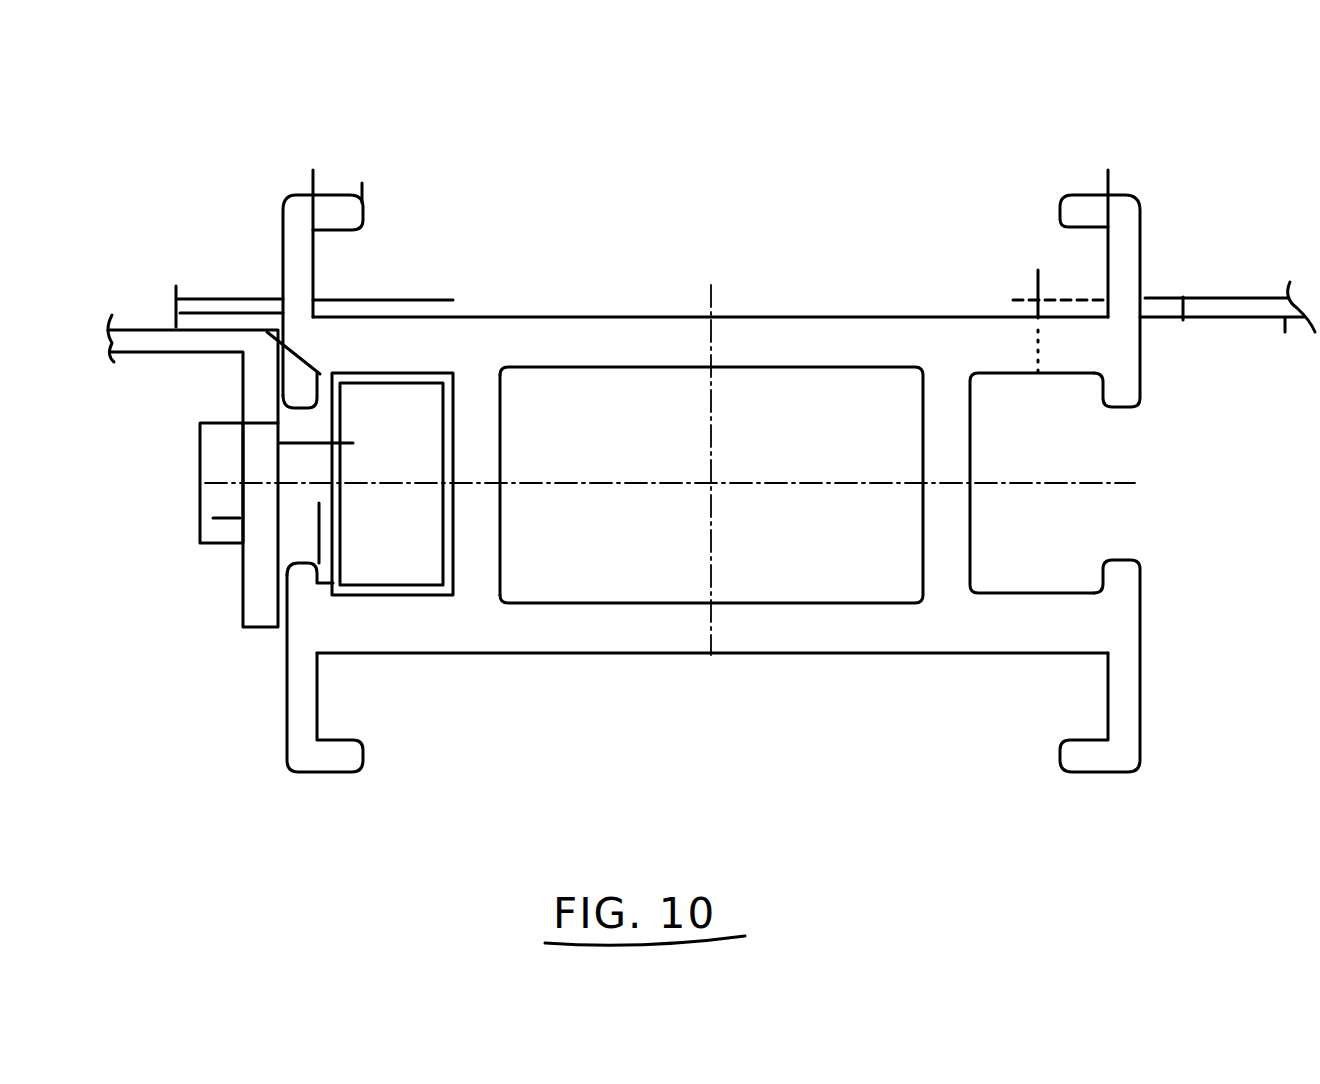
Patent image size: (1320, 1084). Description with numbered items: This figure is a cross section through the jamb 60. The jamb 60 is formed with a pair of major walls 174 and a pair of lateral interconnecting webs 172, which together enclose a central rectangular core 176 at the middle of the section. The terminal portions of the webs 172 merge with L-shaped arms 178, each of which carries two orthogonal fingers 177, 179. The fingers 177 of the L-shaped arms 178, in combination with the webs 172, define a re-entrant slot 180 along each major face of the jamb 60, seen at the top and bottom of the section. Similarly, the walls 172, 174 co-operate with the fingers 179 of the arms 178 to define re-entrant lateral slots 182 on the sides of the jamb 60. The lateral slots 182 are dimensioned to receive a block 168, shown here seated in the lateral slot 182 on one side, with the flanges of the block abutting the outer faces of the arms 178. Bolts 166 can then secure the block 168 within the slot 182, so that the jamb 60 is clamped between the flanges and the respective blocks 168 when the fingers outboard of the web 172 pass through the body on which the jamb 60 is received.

The jamb 60 is at (246, 163).
The bolts 166 is at (215, 470).
The block 168 is at (375, 560).
The lateral interconnecting webs 172 is at (577, 342).
The major walls 174 is at (488, 453).
The central rectangular core 176 is at (670, 470).
The fingers 177 is at (366, 230).
The L-shaped arms 178 is at (300, 265).
The fingers 179 is at (295, 395).
The re-entrant slot 180 is at (814, 277).
The re-entrant lateral slots 182 is at (1092, 470).